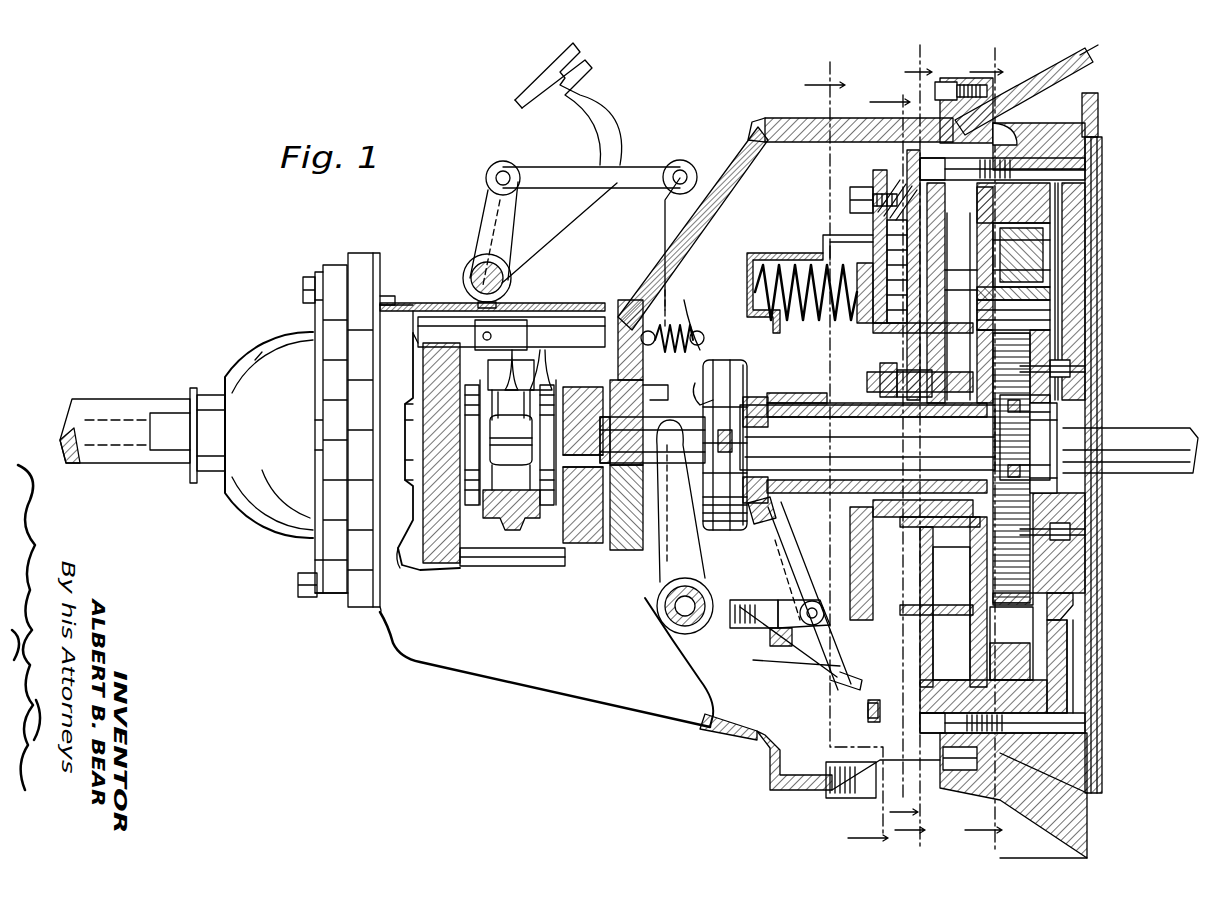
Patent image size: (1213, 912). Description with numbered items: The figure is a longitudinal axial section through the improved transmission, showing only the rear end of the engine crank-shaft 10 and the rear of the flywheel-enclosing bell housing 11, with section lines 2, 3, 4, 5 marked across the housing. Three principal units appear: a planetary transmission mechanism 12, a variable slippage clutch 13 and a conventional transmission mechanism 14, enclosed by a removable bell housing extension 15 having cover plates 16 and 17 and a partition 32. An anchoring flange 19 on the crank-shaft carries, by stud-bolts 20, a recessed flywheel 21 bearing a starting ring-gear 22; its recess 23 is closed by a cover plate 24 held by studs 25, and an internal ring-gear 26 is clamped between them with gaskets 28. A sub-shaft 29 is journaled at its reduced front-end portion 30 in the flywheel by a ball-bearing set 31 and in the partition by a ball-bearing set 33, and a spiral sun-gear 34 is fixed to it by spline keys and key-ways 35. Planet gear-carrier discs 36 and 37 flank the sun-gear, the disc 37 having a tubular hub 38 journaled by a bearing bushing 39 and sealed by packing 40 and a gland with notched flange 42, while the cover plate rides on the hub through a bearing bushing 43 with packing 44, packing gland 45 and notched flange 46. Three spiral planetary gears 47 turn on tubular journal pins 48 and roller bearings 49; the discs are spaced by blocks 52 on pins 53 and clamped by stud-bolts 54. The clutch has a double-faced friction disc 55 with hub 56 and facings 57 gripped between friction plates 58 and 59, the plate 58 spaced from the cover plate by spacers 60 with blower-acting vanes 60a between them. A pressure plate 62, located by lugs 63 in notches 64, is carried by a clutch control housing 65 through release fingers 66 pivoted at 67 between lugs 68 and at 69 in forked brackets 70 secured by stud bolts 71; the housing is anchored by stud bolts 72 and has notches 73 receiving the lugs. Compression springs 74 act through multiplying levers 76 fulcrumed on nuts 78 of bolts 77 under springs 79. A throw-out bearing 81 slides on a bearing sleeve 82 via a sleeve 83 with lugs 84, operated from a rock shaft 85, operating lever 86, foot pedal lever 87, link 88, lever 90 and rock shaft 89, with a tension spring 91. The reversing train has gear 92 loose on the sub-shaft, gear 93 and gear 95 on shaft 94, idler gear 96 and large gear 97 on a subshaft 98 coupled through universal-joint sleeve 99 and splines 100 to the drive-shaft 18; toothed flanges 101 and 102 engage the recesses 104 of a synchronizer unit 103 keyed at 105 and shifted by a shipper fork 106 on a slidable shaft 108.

The section line 2 is at (846, 453).
The section line 3 is at (894, 446).
The section line 4 / shaft portion 4 is at (846, 440).
The section line 5 is at (984, 449).
The crank-shaft 10 is at (1175, 480).
The bell housing 11 is at (1070, 72).
The planetary transmission mechanism 12 is at (1050, 260).
The variable slippage clutch 13 is at (880, 225).
The conventional transmission mechanism 14 is at (540, 345).
The bell housing extension 15 is at (694, 720).
The cover plate 16 is at (742, 160).
The cover plate 17 is at (412, 304).
The drive-shaft 18 is at (137, 408).
The anchoring flange 19 is at (1088, 400).
The stud-bolts 20 is at (1085, 346).
The flywheel 21 is at (1102, 144).
The ring-gear 22 is at (1100, 112).
The recess 23 is at (1050, 200).
The cover plate 24 is at (975, 312).
The studs 25 is at (962, 162).
The internal ring-gear 26 is at (1050, 232).
The gaskets 28 is at (1060, 192).
The sub-shaft 29 is at (867, 448).
The reduced front-end portion 30 is at (1088, 455).
The ball-bearing set 31 is at (1062, 430).
The partition 32 is at (610, 368).
The ball-bearing set 33 is at (650, 388).
The spiral sun-gear 34 is at (998, 469).
The spline keys and key-ways 35 is at (1023, 541).
The planet gear-carrier disc 36 is at (1050, 272).
The planet gear-carrier disc 37 is at (977, 283).
The tubular hub 38 is at (870, 398).
The bearing bushing 39 is at (933, 418).
The packing 40 is at (897, 416).
The notched flange 42 is at (838, 403).
The bearing bushing 43 is at (958, 380).
The packing 44 is at (935, 340).
The packing gland 45 is at (940, 398).
The notched flange 46 is at (915, 363).
The spiral planetary gears 47 is at (1095, 325).
The tubular journal pins 48 is at (1048, 330).
The roller bearings 49 is at (1050, 290).
The spacing blocks 52 is at (1060, 645).
The stud-acting pins 53 is at (1040, 627).
The stud-bolts 54 is at (1060, 592).
The double-faced friction disc 55 is at (920, 580).
The hub 56 is at (870, 517).
The friction facings 57 is at (1040, 328).
The friction plate 58 is at (920, 600).
The friction plate 59 is at (880, 580).
The spacers 60 is at (930, 760).
The blower-acting vanes 60a is at (873, 328).
The pressure plate 62 is at (858, 533).
The lugs 63 is at (830, 676).
The notches 64 is at (868, 700).
The clutch control housing 65 is at (750, 628).
The clutch release fingers 66 is at (782, 558).
The pivots 67 is at (795, 648).
The lugs 68 is at (875, 595).
The pivots 69 is at (805, 622).
The forked brackets 70 is at (809, 596).
The stud bolts 71 is at (728, 612).
The stud bolts 72 is at (870, 722).
The notches 73 is at (775, 650).
The coiled compression springs 74 is at (782, 270).
The spring pressure multiplying levers 76 is at (885, 250).
The bolts 77 is at (852, 195).
The nuts 78 is at (860, 190).
The coiled springs 79 is at (890, 195).
The throw-out bearing 81 is at (727, 350).
The bearing sleeve 82 is at (652, 440).
The sleeve 83 is at (704, 410).
The projecting lugs 84 is at (705, 462).
The transverse rock shaft 85 is at (676, 618).
The operating lever 86 is at (663, 584).
The foot pedal equipped lever 87 is at (605, 83).
The link 88 is at (543, 170).
The rock shaft 89 is at (470, 265).
The lever 90 is at (482, 213).
The coiled tension spring 91 is at (688, 310).
The gear 92 is at (570, 385).
The gear 93 is at (560, 562).
The shaft 94 is at (500, 562).
The gear 95 is at (470, 566).
The idler gear 96 is at (420, 552).
The gear 97 is at (435, 486).
The subshaft 98 is at (422, 438).
The sleeve of universal joint 99 is at (222, 441).
The spline key and keyways 100 is at (192, 410).
The externally toothed flange 101 is at (550, 505).
The externally toothed flange 102 is at (485, 345).
The synchronizer unit 103 is at (500, 570).
The internally gear-toothed recess 104 is at (492, 515).
The key 105 is at (509, 432).
The shipper fork 106 is at (515, 330).
The axially slidable shaft 108 is at (511, 330).